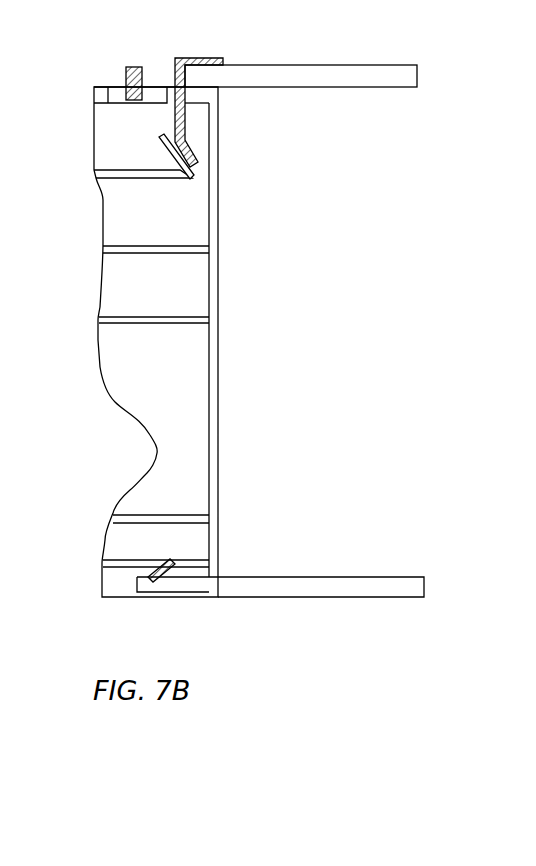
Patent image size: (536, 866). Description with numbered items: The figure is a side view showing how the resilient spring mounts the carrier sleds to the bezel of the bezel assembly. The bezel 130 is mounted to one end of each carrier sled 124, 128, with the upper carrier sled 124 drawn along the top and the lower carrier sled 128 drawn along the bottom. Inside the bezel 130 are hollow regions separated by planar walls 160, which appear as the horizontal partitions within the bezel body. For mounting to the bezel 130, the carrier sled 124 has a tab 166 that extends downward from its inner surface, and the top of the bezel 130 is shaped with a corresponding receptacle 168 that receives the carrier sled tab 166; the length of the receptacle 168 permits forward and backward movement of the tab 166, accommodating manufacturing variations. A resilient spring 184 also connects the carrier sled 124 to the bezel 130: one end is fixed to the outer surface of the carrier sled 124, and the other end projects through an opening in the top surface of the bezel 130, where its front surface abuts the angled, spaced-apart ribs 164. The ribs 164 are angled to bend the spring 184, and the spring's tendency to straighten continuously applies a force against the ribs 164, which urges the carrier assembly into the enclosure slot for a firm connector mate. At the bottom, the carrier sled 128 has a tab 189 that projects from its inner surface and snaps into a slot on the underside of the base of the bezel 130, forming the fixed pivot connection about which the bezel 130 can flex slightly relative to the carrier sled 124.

The carrier sled 124 is at (315, 80).
The carrier sled 128 is at (343, 583).
The bezel 130 is at (120, 363).
The planar walls 160 is at (192, 315).
The ribs 164 is at (175, 153).
The carrier sled tab 166 is at (123, 70).
The receptacle 168 is at (122, 98).
The resilient spring 184 is at (177, 82).
The tab 189 is at (148, 572).